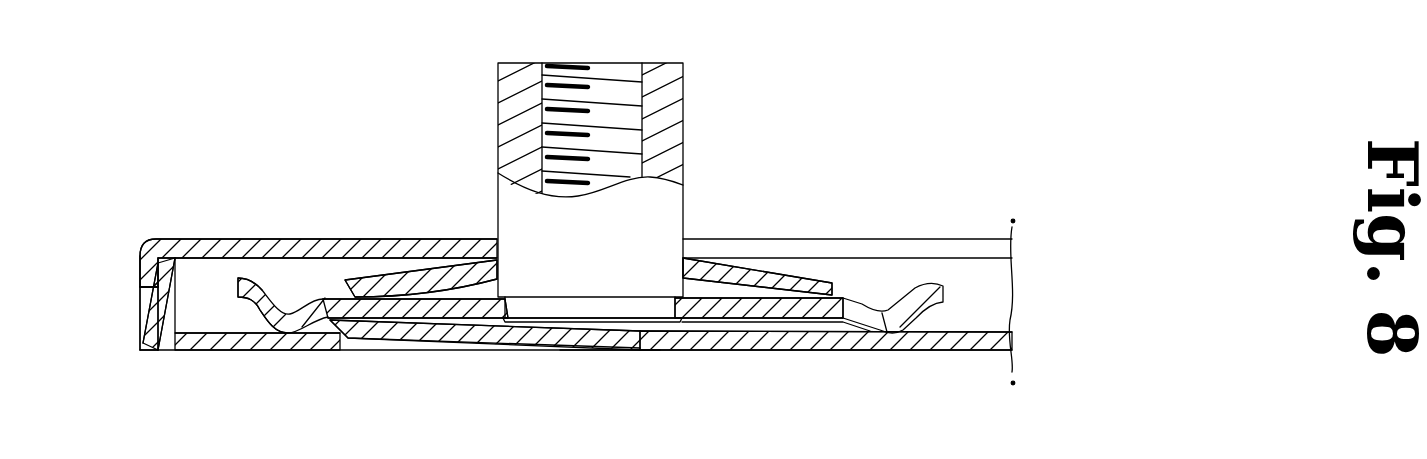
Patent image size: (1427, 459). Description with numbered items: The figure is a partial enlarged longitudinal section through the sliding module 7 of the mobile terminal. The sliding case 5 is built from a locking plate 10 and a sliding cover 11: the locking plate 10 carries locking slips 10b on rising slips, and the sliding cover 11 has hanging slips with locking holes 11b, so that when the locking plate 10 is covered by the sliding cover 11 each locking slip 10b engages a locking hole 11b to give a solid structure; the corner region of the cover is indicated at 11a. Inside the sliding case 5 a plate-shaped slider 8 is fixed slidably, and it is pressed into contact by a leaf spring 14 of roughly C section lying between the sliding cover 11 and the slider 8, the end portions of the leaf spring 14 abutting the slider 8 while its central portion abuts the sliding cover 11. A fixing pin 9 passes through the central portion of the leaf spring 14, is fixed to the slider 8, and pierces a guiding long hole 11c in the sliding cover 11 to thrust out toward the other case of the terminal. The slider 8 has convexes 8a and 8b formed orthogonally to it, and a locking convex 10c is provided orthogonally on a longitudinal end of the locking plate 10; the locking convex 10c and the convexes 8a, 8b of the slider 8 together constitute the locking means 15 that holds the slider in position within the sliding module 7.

The sliding case 5 is at (603, 350).
The sliding module 7 is at (947, 228).
The slider 8 is at (748, 310).
The convex of slider 8a is at (314, 289).
The convex of slider 8b is at (888, 318).
The fixing pin 9 is at (683, 133).
The locking plate 10 is at (826, 344).
The locking slip 10b is at (170, 348).
The locking convex 10c is at (353, 340).
The sliding cover 11 is at (425, 250).
The shell corner 11a is at (142, 278).
The locking hole 11b is at (140, 330).
The guiding long hole 11c is at (852, 249).
The leaf spring 14 is at (752, 268).
The locking means 15 is at (295, 308).